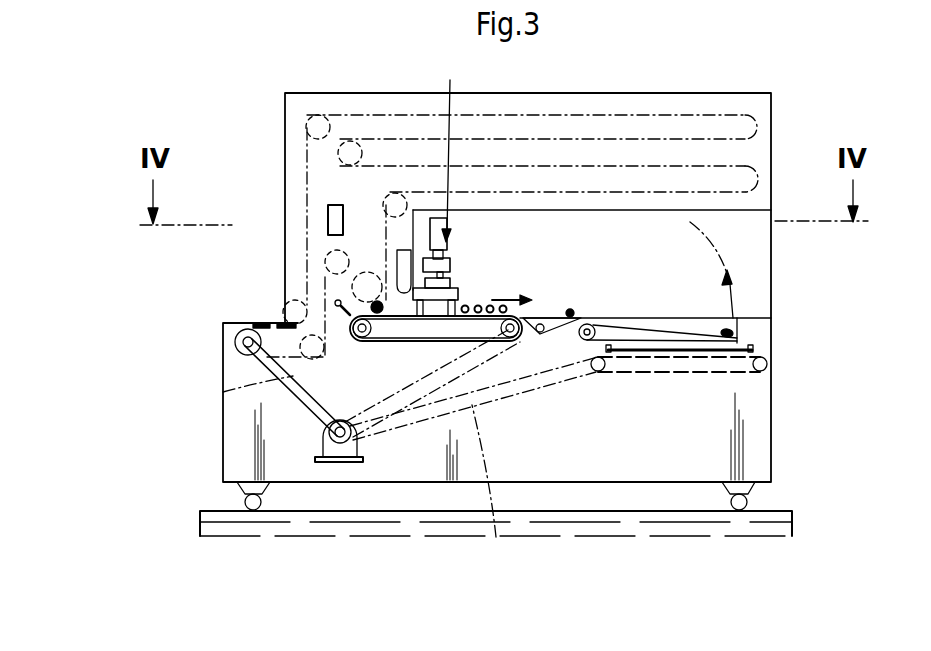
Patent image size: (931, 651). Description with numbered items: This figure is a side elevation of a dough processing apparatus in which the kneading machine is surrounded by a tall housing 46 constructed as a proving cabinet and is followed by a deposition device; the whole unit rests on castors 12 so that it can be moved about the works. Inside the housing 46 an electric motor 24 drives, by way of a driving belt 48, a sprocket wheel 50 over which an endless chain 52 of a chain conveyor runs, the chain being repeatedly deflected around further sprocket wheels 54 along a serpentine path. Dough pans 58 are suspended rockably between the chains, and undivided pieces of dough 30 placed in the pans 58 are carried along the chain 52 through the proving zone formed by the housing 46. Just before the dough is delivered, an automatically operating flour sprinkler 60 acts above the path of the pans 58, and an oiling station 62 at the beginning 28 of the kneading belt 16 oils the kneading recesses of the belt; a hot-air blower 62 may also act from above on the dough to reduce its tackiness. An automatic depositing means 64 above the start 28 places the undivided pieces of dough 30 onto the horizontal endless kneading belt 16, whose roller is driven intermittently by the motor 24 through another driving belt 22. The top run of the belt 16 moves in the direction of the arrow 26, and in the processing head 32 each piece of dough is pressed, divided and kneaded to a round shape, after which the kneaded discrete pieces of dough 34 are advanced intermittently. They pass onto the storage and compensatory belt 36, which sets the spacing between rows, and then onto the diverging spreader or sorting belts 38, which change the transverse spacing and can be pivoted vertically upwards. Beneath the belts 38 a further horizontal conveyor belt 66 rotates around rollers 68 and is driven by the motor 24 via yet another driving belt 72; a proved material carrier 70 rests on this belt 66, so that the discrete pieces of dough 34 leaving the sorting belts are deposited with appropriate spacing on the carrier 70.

The castors 12 is at (257, 509).
The kneading belt 16 is at (428, 317).
The driving belt 22 is at (336, 418).
The electric motor 24 is at (347, 452).
The arrow 26 is at (513, 285).
The beginning of the kneading belt 28 is at (353, 330).
The undivided piece of dough 30 is at (386, 339).
The processing head 32 is at (452, 147).
The discrete pieces of dough 34 is at (466, 305).
The storage and compensatory belt 36 is at (548, 318).
The spreader or sorting belts 38 is at (647, 325).
The housing 46 is at (285, 170).
The driving belt 48 is at (223, 393).
The sprocket wheel 50 is at (236, 338).
The endless chain 52 is at (305, 136).
The sprocket wheels 54 is at (393, 193).
The dough pans 58 is at (283, 322).
The flour sprinkler 60 is at (328, 218).
The oiling station 62 is at (407, 275).
The depositing means 64 is at (366, 265).
The conveyor belt 66 is at (765, 373).
The rollers 68 is at (753, 372).
The proved material carrier 70 is at (742, 347).
The driving belt 72 is at (489, 487).